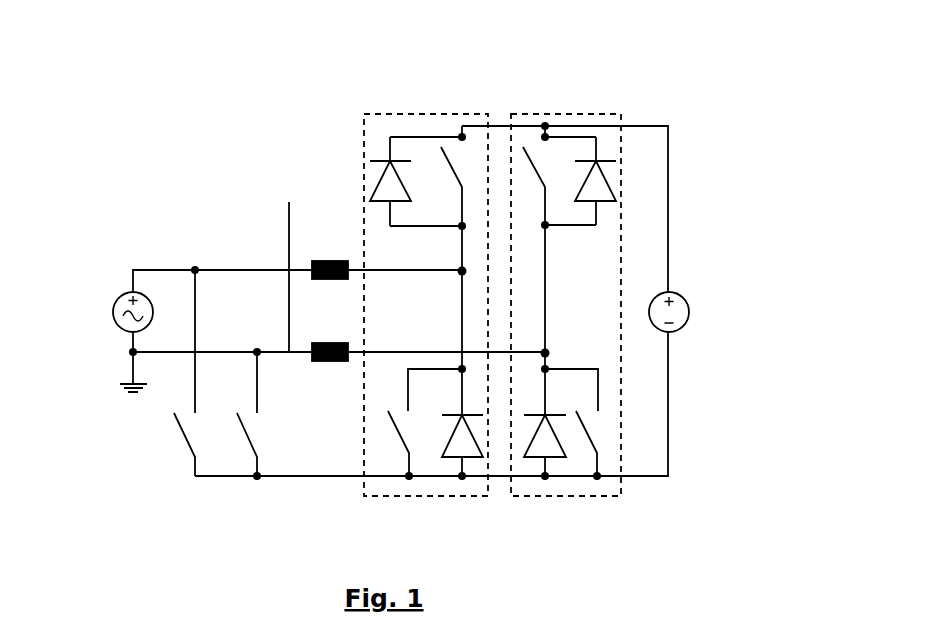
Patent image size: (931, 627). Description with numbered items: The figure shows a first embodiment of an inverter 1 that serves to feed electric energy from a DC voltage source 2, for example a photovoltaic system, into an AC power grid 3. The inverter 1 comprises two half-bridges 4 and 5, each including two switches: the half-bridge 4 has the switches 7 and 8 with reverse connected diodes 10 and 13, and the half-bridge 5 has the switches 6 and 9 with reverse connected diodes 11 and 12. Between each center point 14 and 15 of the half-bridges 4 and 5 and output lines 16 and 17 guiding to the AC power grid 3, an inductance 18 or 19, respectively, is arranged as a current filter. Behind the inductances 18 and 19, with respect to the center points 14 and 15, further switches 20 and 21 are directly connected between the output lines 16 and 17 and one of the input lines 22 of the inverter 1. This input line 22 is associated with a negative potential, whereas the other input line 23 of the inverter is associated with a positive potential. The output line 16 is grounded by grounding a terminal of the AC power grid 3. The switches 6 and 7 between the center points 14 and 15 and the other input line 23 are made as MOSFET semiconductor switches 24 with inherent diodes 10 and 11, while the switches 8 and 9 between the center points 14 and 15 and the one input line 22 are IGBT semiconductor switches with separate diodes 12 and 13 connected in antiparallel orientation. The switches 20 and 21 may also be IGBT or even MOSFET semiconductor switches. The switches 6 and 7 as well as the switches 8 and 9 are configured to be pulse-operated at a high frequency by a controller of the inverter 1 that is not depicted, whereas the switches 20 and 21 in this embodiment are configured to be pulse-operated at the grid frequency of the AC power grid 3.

The inverter 1 is at (685, 98).
The DC voltage source 2 is at (685, 293).
The AC power grid 3 is at (115, 327).
The half-bridge 4 is at (544, 113).
The half-bridge 5 is at (467, 108).
The switch 6 is at (467, 162).
The switch 7 is at (547, 160).
The switch 8 is at (607, 430).
The switch 9 is at (395, 450).
The diode 10 is at (626, 183).
The diode 11 is at (372, 133).
The diode 12 is at (455, 463).
The diode 13 is at (536, 463).
The center point 14 is at (548, 350).
The center point 15 is at (462, 271).
The output line 16 is at (285, 263).
The output line 17 is at (253, 268).
The inductance 18 is at (350, 259).
The inductance 19 is at (352, 342).
The switch 20 is at (257, 428).
The switch 21 is at (195, 428).
The input line 22 is at (628, 478).
The input line 23 is at (628, 125).
The MOSFET semiconductor switches 24 is at (420, 103).